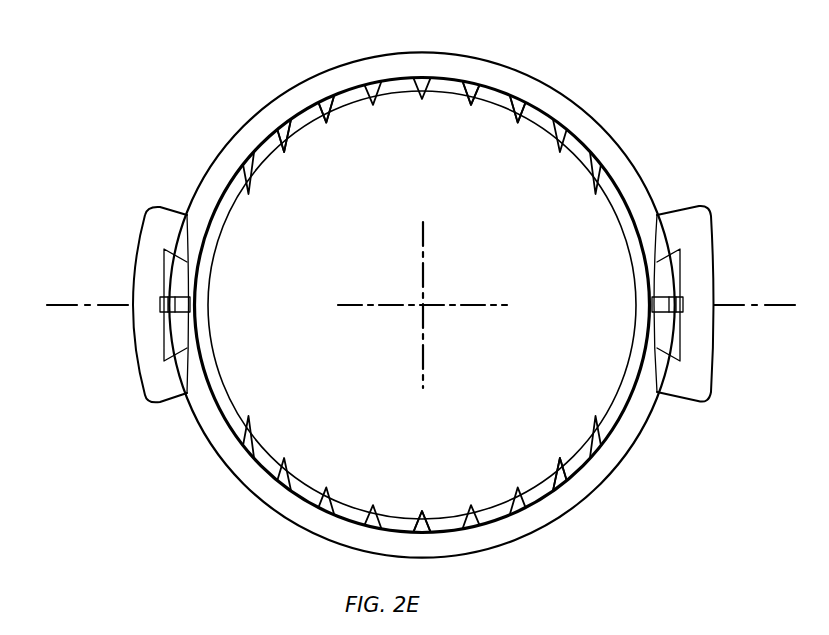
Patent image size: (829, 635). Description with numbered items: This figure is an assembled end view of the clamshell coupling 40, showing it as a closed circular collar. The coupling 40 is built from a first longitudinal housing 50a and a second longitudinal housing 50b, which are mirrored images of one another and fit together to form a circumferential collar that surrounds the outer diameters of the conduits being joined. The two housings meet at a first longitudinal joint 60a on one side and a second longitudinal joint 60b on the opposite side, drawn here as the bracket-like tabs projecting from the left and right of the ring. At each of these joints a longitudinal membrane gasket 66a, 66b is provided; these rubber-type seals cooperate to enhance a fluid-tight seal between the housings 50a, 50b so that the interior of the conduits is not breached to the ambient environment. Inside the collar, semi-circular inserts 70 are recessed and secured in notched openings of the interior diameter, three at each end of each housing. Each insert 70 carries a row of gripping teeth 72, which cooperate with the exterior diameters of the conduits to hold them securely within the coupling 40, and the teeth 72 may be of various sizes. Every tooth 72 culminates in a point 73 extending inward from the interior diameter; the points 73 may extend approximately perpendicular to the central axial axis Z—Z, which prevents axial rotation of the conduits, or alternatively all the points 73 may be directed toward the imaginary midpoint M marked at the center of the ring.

The clamshell coupling 40 is at (272, 76).
The first longitudinal housing 50a is at (630, 445).
The second longitudinal housing 50b is at (625, 155).
The first longitudinal joint 60a is at (681, 311).
The second longitudinal joint 60b is at (167, 312).
The longitudinal membrane gasket 66a is at (655, 297).
The longitudinal membrane gasket 66b is at (189, 296).
The semi-circular insert 70 is at (584, 193).
The gripping tooth 72 is at (287, 152).
The point 73 is at (326, 122).
The imaginary midpoint M is at (423, 305).
The central axial axis Z is at (62, 300).